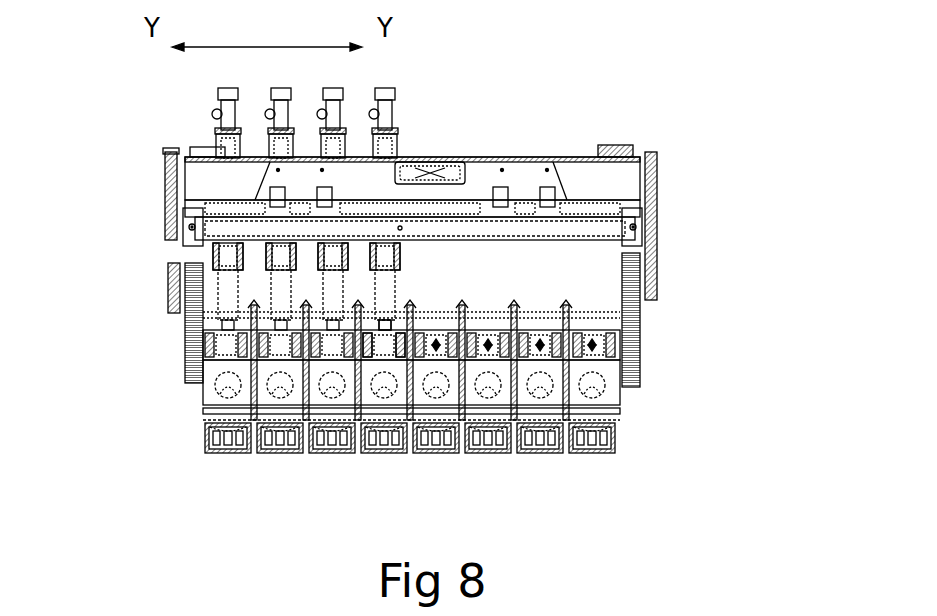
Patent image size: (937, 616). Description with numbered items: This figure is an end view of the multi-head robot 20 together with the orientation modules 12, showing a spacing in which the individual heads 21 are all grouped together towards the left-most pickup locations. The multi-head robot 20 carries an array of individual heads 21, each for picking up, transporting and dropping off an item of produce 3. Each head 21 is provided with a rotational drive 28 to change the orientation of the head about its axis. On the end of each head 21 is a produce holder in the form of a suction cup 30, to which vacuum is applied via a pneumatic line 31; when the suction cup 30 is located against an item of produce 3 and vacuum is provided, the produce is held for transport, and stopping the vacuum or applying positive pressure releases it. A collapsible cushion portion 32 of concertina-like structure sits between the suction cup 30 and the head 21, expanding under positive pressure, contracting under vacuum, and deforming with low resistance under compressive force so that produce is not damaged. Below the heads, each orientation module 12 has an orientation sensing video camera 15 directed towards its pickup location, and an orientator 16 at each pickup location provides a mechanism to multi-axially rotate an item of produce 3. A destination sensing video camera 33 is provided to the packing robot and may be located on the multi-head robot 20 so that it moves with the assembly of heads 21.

The multi-head robot 20 is at (520, 116).
The destination sensing video camera 33 is at (425, 158).
The rotational drive 28 is at (400, 270).
The individual heads 21 is at (277, 292).
The orientation sensing video camera 15 is at (618, 342).
The item of produce 3 is at (600, 387).
The orientation module 12 is at (640, 422).
The orientator 16 is at (587, 465).
The suction cup 30 is at (380, 362).
The pneumatic line 31 is at (396, 362).
The collapsible cushion portion 32 is at (373, 362).